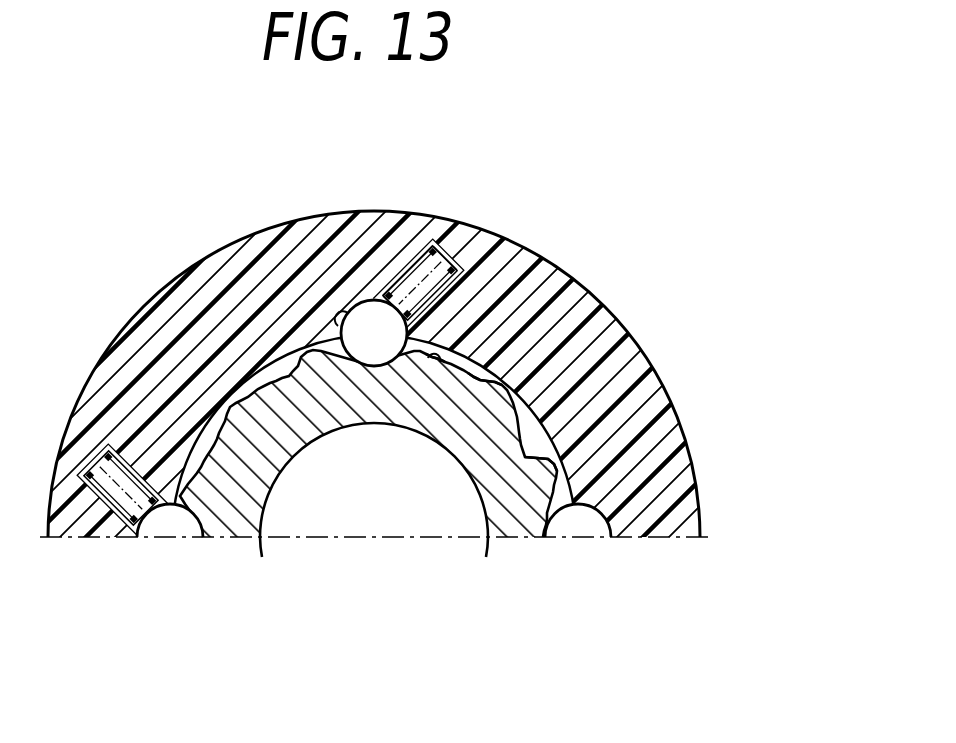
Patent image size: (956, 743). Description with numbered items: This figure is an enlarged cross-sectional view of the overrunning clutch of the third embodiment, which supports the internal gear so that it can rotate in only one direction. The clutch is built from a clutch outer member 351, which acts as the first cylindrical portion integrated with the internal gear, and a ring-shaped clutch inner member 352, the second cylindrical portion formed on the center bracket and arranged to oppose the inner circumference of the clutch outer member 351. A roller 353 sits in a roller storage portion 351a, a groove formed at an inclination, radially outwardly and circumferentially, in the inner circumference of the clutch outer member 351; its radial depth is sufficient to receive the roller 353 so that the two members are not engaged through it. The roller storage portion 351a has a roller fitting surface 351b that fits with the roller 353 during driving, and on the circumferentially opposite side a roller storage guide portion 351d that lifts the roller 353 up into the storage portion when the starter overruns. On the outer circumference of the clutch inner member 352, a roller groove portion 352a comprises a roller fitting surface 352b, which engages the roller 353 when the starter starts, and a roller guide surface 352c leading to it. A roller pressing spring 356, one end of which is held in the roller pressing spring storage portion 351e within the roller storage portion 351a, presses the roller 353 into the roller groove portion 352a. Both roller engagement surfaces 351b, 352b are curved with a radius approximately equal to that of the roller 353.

The clutch outer member 351 is at (203, 305).
The roller storage portion 351a is at (382, 276).
The roller fitting surface 351b is at (336, 322).
The roller storage guide portion 351d is at (390, 268).
The roller pressing spring storage portion 351e is at (441, 266).
The clutch inner member 352 is at (283, 538).
The roller groove portion 352a is at (442, 385).
The roller fitting surface 352b is at (470, 390).
The roller guide surface 352c is at (433, 372).
The roller 353 is at (370, 322).
The roller pressing spring 356 is at (443, 267).